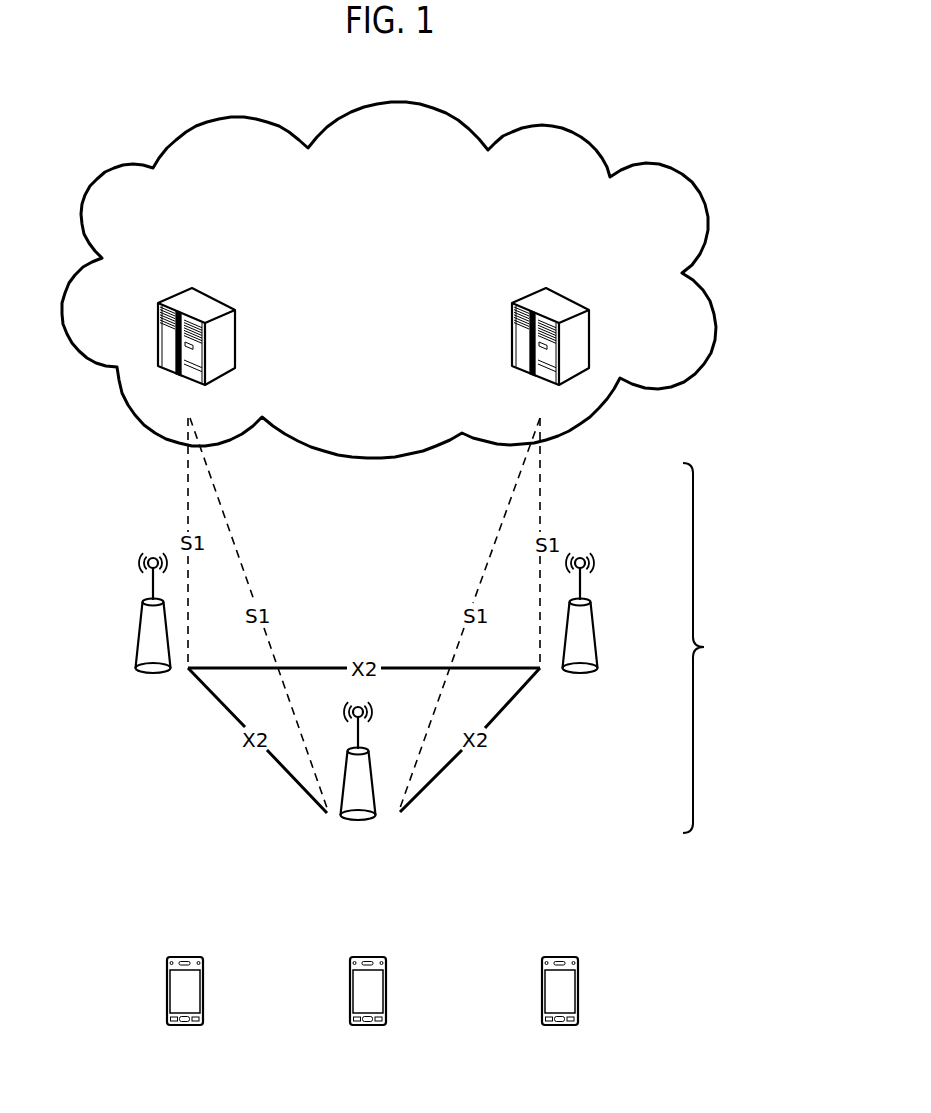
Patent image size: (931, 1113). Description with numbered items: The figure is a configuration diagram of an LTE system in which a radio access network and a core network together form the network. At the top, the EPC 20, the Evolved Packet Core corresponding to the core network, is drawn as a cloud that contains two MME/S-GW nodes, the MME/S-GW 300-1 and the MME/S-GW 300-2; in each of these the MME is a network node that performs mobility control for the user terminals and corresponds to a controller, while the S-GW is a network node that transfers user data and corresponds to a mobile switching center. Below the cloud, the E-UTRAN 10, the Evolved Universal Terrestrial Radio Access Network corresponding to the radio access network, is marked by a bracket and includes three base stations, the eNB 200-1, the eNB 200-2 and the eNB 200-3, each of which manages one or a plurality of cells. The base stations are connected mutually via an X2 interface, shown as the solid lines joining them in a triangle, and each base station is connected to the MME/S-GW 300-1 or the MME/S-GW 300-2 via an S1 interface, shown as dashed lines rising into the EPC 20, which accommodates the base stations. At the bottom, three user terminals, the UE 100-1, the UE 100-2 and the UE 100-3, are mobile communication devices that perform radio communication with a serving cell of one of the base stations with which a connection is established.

The E-UTRAN 10 is at (741, 648).
The EPC 20 is at (590, 138).
The UE 100-1 is at (197, 957).
The UE 100-2 is at (380, 957).
The UE 100-3 is at (559, 957).
The eNB 200-1 is at (137, 636).
The eNB 200-2 is at (375, 793).
The eNB 200-3 is at (592, 616).
The MME/S-GW 300-1 is at (240, 276).
The MME/S-GW 300-2 is at (580, 276).